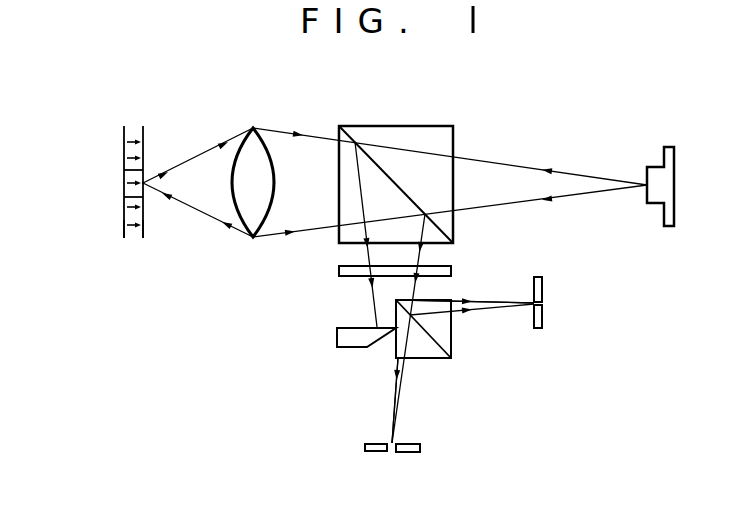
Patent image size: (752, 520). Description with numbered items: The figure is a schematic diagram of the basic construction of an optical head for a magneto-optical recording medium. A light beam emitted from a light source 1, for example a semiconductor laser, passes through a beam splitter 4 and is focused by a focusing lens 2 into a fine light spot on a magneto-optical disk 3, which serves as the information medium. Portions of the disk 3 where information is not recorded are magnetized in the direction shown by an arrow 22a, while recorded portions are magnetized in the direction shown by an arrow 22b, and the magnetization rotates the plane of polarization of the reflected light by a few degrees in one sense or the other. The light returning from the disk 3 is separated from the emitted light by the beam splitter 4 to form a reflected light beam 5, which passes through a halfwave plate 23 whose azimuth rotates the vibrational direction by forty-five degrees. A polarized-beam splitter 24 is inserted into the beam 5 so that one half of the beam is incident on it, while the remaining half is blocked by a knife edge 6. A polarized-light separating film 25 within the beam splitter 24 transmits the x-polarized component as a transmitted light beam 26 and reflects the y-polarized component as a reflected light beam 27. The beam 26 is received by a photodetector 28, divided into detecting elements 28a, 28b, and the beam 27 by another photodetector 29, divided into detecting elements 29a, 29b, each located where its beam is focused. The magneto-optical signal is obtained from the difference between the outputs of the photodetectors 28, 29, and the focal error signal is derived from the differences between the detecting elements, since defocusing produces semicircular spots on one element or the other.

The light source 1 is at (669, 147).
The focusing lens 2 is at (253, 128).
The magneto-optical disk 3 is at (143, 153).
The arrow indicating magnetization direction of unrecorded portion 22a is at (131, 236).
The arrow indicating magnetization direction of recorded portion 22b is at (124, 184).
The beam splitter 4 is at (430, 126).
The reflected light beam 5 is at (360, 251).
The halfwave plate 23 is at (452, 272).
The knife edge 6 is at (337, 337).
The polarized-beam splitter 24 is at (428, 360).
The polarized-light separating film 25 is at (436, 336).
The transmitted light beam 26 is at (392, 413).
The reflected light beam 27 is at (493, 302).
The photodetector 28 is at (422, 448).
The detecting element 28a is at (376, 453).
The detecting element 28b is at (407, 453).
The photodetector 29 is at (538, 330).
The detecting element 29a is at (544, 320).
The detecting element 29b is at (544, 286).